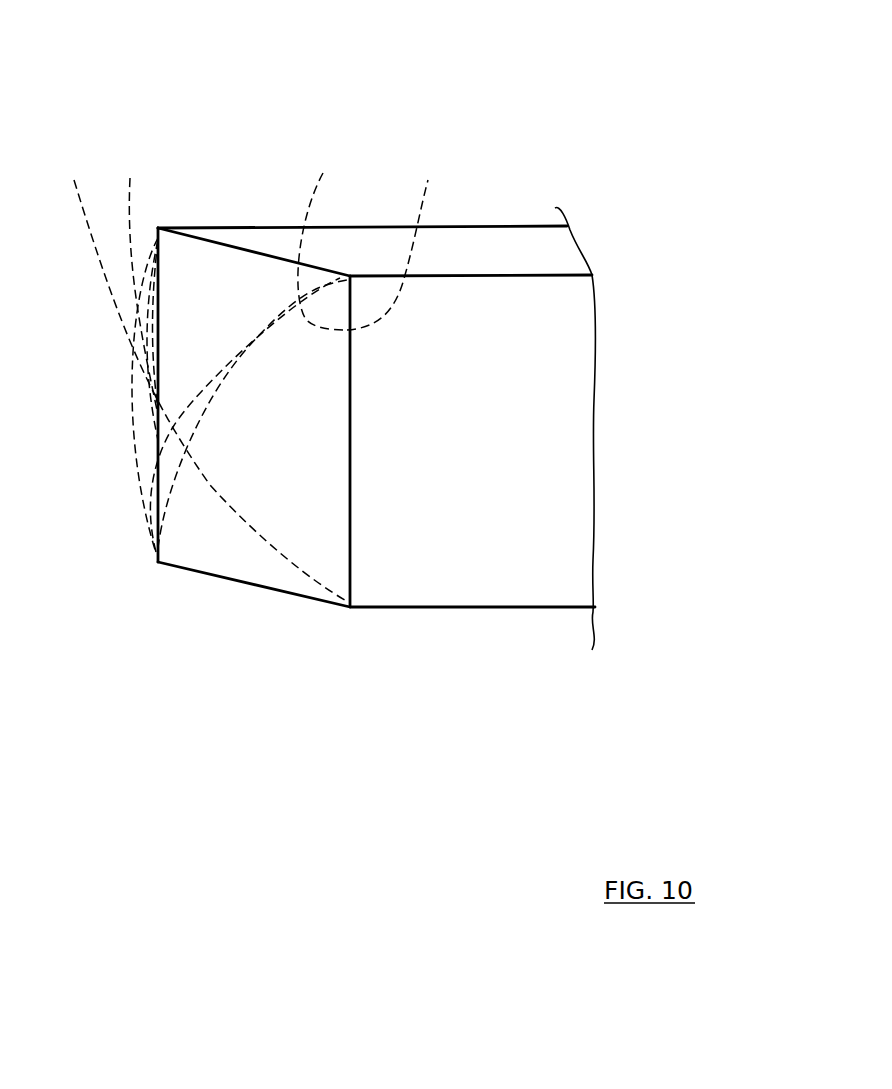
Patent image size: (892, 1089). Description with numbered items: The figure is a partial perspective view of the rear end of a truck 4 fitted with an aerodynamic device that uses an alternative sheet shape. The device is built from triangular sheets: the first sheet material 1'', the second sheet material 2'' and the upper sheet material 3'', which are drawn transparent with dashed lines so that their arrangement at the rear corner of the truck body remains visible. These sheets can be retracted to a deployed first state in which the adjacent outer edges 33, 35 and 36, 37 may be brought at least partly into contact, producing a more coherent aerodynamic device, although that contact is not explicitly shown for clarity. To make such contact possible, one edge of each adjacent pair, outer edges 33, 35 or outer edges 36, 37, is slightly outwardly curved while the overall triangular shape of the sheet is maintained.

The cutting insert body 4 is at (414, 129).
The first sheet material 1'' is at (101, 389).
The second sheet material 2'' is at (254, 589).
The upper sheet material 3'' is at (248, 351).
The outer edge 33 is at (194, 375).
The outer edge 35 is at (134, 275).
The outer edge 36 is at (328, 237).
The outer edge 37 is at (395, 237).